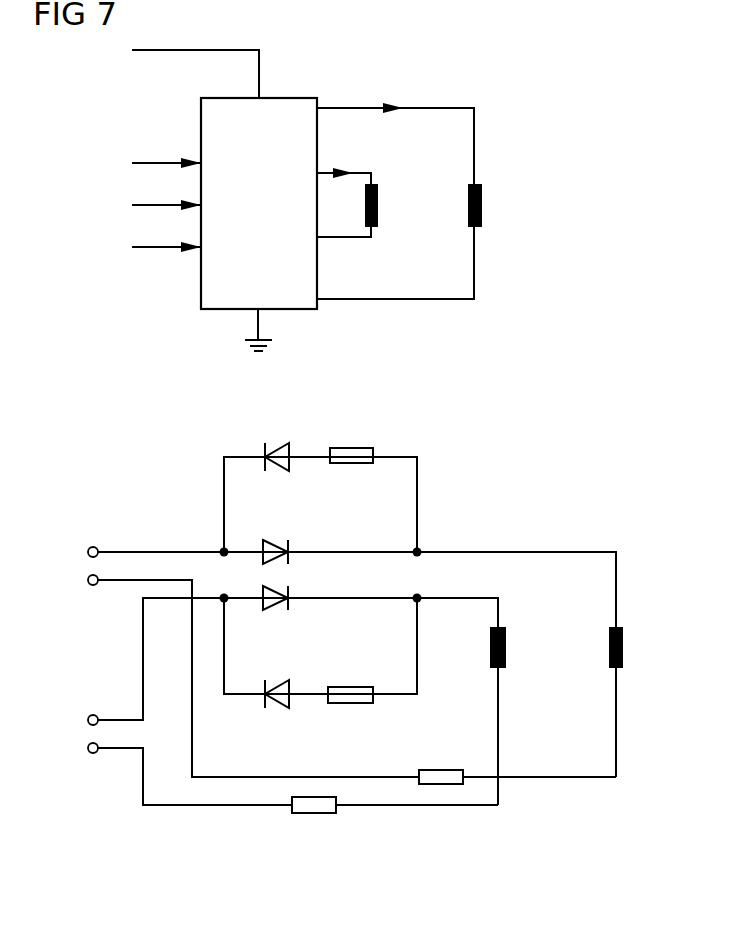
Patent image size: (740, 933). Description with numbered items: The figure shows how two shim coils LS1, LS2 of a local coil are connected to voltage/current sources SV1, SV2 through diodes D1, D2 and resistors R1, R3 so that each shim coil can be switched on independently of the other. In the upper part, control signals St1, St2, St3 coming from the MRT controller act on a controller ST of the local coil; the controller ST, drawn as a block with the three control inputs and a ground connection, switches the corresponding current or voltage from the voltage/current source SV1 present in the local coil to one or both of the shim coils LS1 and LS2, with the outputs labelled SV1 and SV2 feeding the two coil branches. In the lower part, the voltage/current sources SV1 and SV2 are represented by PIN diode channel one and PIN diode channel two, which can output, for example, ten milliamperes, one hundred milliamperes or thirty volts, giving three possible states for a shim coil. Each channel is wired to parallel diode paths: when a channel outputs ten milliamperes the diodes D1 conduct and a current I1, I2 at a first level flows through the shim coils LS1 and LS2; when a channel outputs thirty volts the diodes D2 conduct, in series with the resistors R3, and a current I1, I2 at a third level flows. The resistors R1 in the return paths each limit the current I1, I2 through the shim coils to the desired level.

The controller of the local coil ST is at (224, 200).
The control signal St1 is at (166, 148).
The control signal St2 is at (166, 190).
The control signal St3 is at (166, 231).
The voltage/current source SV1 is at (320, 106).
The voltage/current source SV2 is at (320, 171).
The shim coil LS1 is at (378, 205).
The shim coil LS2 is at (482, 205).
The diode D1 is at (275, 540).
The diode D2 is at (275, 445).
The resistor R1 is at (443, 770).
The resistor R3 is at (350, 448).
The current I1 is at (498, 714).
The current I2 is at (616, 714).